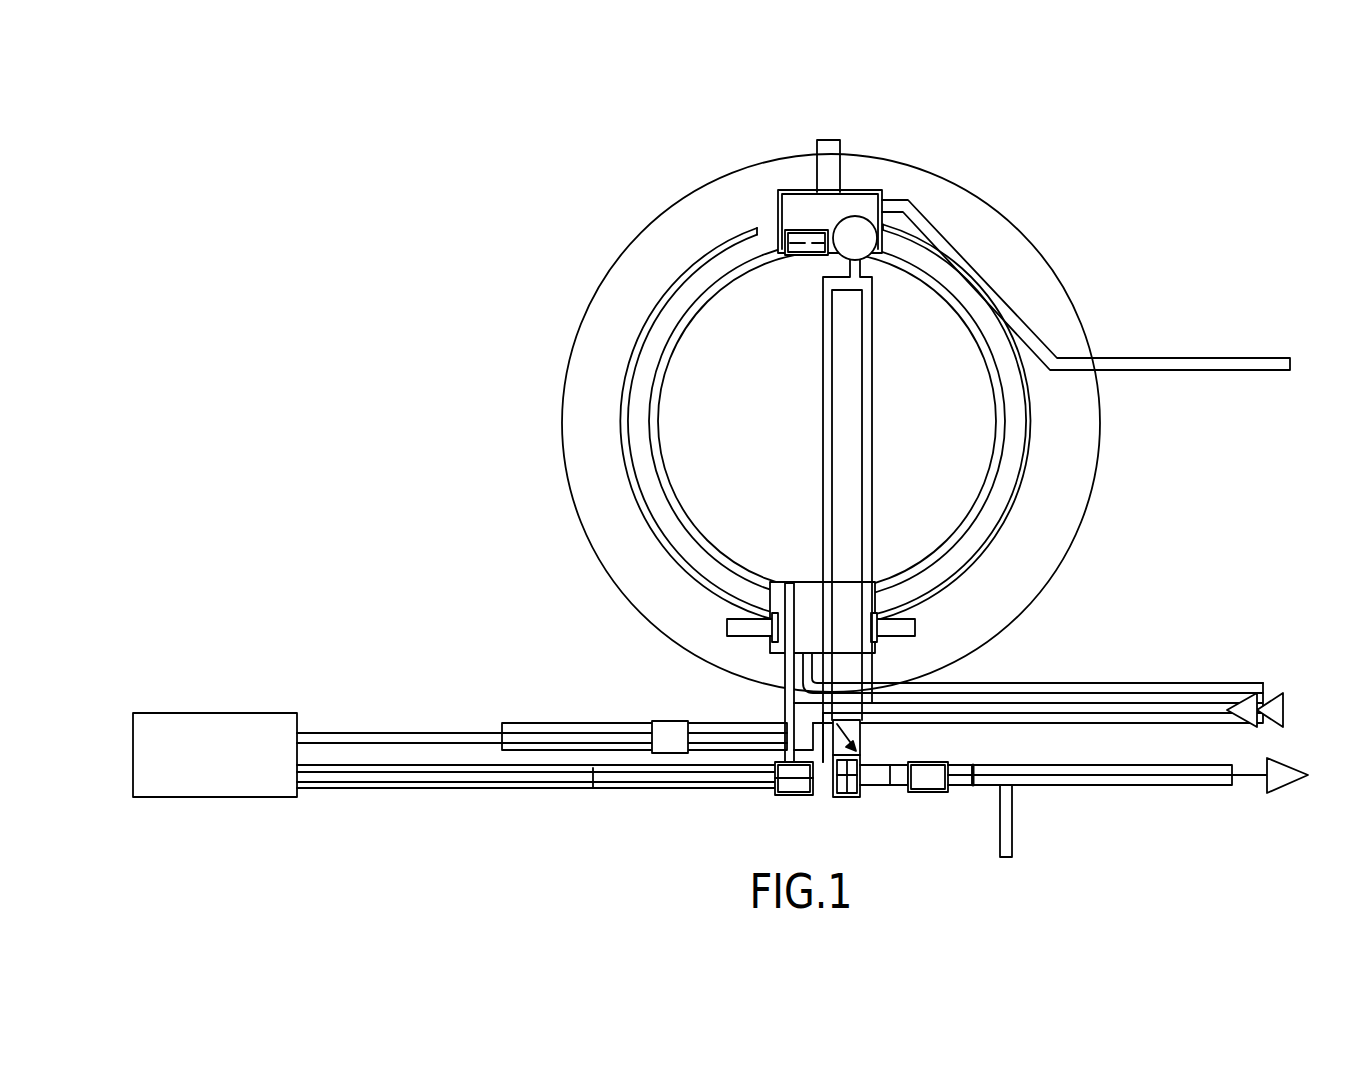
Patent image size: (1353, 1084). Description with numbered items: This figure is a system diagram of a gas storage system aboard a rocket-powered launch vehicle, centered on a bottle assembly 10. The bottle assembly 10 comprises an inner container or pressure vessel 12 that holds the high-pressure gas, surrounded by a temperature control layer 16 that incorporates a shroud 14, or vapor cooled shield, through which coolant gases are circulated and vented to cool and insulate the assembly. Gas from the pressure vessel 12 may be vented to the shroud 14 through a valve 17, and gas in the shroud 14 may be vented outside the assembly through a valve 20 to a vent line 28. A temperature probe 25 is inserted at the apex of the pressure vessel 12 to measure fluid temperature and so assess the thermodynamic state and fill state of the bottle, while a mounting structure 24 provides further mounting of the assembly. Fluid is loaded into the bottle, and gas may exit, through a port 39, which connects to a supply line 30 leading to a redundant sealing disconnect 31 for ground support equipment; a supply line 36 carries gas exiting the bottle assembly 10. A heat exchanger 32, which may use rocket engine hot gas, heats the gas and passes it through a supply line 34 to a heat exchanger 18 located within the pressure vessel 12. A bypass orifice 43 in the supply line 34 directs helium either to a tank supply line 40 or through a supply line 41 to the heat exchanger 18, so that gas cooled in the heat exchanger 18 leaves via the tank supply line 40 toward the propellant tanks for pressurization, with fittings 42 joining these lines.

The bottle assembly 10 is at (791, 419).
The inner container (pressure vessel) 12 is at (978, 321).
The shroud (vapor cooled shield) 14 is at (625, 466).
The temperature control layer 16 is at (605, 535).
The valve 17 is at (727, 626).
The heat exchanger 18 is at (821, 470).
The valve 20 is at (773, 218).
The mounting structure 24 is at (840, 140).
The temperature probe 25 is at (870, 208).
The vent line 28 is at (1202, 357).
The supply line 30 is at (935, 679).
The redundant sealing disconnect 31 is at (985, 703).
The heat exchanger 32 is at (248, 797).
The supply line 34 is at (542, 783).
The supply line 36 is at (355, 733).
The port 39 is at (788, 600).
The tank supply line 40 is at (1077, 787).
The supply line 41 is at (865, 762).
The fittings 42 is at (903, 762).
The bypass orifice 43 is at (843, 797).